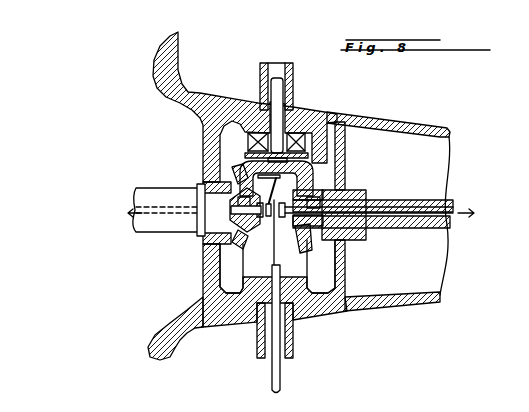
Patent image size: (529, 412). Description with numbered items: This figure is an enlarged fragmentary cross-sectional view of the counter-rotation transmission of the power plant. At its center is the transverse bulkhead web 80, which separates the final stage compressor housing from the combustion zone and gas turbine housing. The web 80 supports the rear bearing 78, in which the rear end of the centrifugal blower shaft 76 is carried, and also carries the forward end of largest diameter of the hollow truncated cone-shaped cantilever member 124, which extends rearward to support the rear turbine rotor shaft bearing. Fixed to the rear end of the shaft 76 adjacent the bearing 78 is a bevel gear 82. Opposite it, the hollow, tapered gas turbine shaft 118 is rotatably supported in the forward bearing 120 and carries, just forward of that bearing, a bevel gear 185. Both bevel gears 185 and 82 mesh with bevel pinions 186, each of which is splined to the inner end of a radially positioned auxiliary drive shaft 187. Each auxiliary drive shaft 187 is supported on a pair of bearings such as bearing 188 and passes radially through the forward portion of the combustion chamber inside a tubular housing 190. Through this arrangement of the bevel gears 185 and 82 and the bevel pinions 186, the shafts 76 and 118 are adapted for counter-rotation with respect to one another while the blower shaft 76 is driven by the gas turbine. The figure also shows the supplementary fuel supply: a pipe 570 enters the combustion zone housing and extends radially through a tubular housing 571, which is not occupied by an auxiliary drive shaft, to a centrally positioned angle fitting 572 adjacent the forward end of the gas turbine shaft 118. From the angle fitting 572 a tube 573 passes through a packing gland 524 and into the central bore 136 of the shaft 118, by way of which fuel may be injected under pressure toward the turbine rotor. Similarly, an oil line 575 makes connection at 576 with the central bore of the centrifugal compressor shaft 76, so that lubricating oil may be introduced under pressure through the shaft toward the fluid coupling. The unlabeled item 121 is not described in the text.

The centrifugal blower shaft 76 is at (150, 232).
The bearing 78 is at (203, 234).
The transverse bulkhead web 80 is at (203, 147).
The bevel gear 82 is at (243, 244).
The hollow tapered shaft 118 is at (417, 229).
The forward bearing 120 is at (364, 228).
The housing bottom wall 121 is at (397, 305).
The hollow truncated cone-shaped cantilever member 124 is at (392, 117).
The bore 136 is at (390, 206).
The bevel gear 185 is at (300, 243).
The bevel pinion 186 is at (304, 164).
The auxiliary drive shaft 187 is at (272, 92).
The bearing 188 is at (291, 132).
The tubular housing 190 is at (294, 90).
The packing gland 524 is at (335, 262).
The pipe 570 is at (282, 342).
The tubular housing 571 is at (293, 350).
The angle fitting 572 is at (268, 218).
The tube 573 is at (330, 246).
The oil line 575 is at (222, 184).
The connection 576 is at (218, 252).